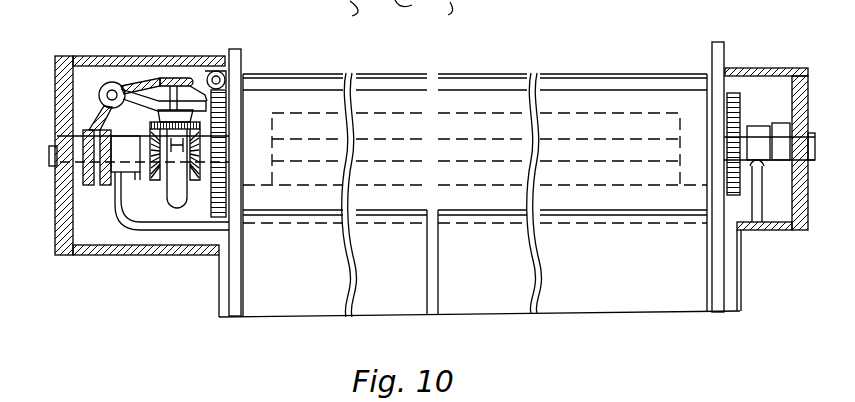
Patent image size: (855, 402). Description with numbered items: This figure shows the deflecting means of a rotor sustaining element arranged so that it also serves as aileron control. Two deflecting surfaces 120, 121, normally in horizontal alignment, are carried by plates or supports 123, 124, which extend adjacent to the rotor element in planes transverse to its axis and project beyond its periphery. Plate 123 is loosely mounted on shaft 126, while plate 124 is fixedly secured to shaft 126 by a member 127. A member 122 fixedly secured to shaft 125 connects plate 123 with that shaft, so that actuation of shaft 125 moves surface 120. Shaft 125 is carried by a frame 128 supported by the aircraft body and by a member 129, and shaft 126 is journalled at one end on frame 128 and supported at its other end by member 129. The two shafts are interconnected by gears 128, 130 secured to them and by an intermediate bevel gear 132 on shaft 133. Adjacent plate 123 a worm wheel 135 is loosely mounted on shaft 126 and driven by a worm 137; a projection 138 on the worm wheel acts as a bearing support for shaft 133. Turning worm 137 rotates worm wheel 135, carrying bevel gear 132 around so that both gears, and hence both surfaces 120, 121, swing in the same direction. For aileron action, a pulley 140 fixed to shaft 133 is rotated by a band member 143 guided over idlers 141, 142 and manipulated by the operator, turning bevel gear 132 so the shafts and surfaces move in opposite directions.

The deflecting surface 120 is at (297, 305).
The deflecting surface 121 is at (642, 300).
The member 122 is at (172, 241).
The plate or support 123 is at (236, 302).
The plate or support 124 is at (718, 300).
The shaft 125 is at (51, 163).
The shaft 126 is at (778, 123).
The member 127 is at (733, 261).
The frame 128 is at (147, 128).
The member 129 is at (174, 203).
The gear 130 is at (227, 103).
The intermediate gear (bevel gear) 132 is at (163, 110).
The shaft 133 is at (231, 53).
The worm wheel 135 is at (187, 97).
The worm 137 is at (226, 73).
The element or projection 138 is at (185, 78).
The pulley 140 is at (180, 78).
The idler 141 is at (98, 96).
The idler 142 is at (84, 148).
The band member 143 is at (101, 82).